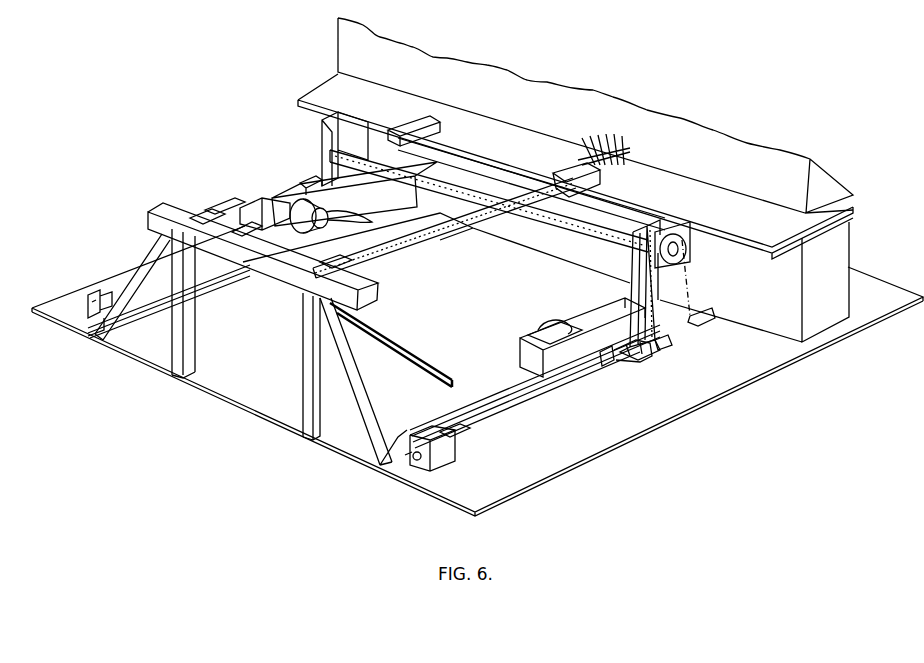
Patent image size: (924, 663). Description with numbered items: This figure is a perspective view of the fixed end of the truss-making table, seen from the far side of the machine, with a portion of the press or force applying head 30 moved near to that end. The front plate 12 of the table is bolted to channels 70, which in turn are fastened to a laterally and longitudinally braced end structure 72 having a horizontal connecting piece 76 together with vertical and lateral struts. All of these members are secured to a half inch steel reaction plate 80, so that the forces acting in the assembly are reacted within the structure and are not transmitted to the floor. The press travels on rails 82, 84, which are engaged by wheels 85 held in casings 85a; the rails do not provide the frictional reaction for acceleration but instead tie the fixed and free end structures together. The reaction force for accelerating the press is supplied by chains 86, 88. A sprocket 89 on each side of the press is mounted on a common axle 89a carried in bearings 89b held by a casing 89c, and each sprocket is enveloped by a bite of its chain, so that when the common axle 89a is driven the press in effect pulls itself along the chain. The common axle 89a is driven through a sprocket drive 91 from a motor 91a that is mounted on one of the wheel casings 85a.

The front plate 12 is at (322, 97).
The force applying head 30 is at (732, 149).
The channels 70 is at (392, 251).
The end structure 72 is at (412, 291).
The horizontal connecting piece 76 is at (268, 272).
The steel plate 80 is at (252, 355).
The rail 82 is at (437, 414).
The rail 84 is at (143, 300).
The wheels 85 is at (566, 333).
The casings 85a is at (519, 346).
The chain 86 is at (606, 368).
The chain 88 is at (118, 298).
The sprocket 89 is at (652, 270).
The common axle 89a is at (587, 227).
The bearings 89b is at (686, 258).
The casing 89c is at (328, 142).
The sprocket drive 91 is at (303, 181).
The motor 91a is at (284, 190).